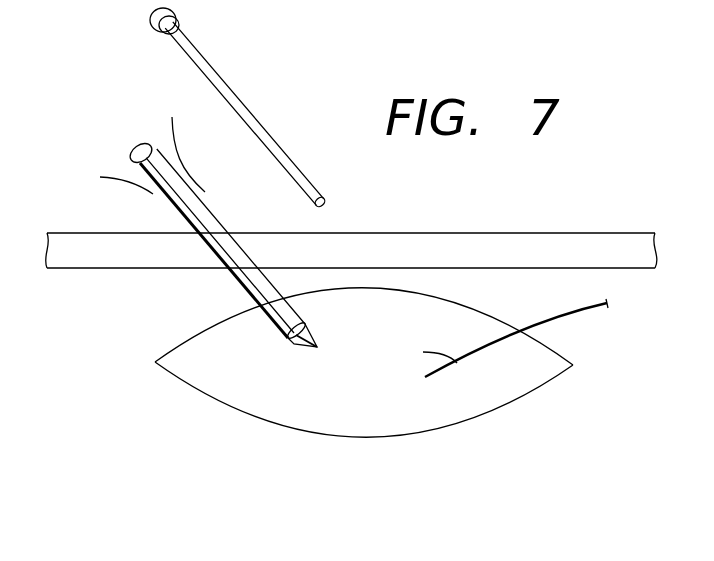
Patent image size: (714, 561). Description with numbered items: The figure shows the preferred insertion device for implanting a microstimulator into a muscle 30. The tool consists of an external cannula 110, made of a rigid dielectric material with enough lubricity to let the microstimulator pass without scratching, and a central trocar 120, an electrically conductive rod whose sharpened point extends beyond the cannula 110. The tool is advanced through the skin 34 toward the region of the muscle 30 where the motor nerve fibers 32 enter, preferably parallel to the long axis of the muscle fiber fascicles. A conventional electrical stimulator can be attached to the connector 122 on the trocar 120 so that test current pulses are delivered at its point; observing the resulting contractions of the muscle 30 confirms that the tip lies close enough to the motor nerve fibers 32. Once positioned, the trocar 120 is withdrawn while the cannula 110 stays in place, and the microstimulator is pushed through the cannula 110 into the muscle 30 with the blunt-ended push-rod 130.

The muscle 30 is at (374, 389).
The motor nerve fibers 32 is at (560, 313).
The skin 34 is at (443, 262).
The external cannula 110 is at (207, 208).
The central trocar 120 is at (237, 265).
The connector 122 is at (143, 147).
The blunt-ended push-rod 130 is at (243, 103).